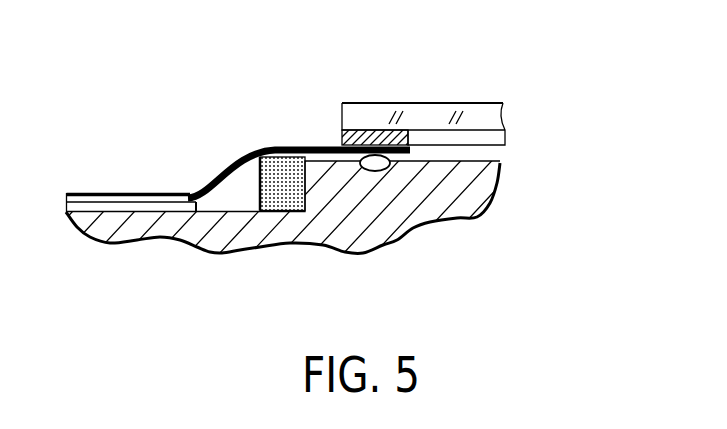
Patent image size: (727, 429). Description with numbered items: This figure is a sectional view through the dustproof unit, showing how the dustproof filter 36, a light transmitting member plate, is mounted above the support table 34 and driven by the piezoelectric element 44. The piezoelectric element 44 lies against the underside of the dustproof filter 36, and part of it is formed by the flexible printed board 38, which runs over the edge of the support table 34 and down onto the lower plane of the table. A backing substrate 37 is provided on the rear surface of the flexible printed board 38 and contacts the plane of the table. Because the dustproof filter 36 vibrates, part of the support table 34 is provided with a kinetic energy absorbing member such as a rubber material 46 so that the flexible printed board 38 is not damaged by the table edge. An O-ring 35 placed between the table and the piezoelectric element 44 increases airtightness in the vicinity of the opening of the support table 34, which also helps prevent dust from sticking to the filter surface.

The support table 34 is at (428, 190).
The O-ring 35 is at (375, 165).
The dustproof filter 36 is at (427, 111).
The backing substrate 37 is at (165, 204).
The flexible printed board 38 is at (203, 184).
The piezoelectric element 44 is at (362, 131).
The rubber material 46 is at (281, 168).